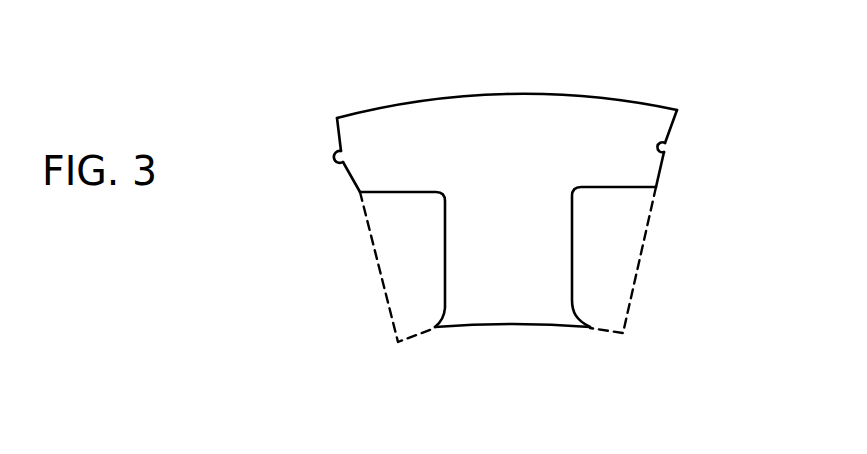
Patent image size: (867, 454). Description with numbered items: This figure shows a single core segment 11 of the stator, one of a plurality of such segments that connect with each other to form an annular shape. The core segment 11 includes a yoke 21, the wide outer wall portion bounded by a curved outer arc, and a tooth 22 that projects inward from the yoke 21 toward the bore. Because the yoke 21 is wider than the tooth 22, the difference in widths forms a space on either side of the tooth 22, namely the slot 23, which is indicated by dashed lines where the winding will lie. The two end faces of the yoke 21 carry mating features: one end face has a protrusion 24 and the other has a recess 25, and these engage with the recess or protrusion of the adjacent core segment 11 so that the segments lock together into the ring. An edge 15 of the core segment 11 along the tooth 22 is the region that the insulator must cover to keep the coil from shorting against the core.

The core segment 11 is at (650, 92).
The yoke 21 is at (378, 137).
The tooth 22 is at (467, 277).
The slot 23 is at (383, 238).
The protrusion 24 is at (335, 160).
The recess 25 is at (665, 146).
The edge 15 is at (573, 258).